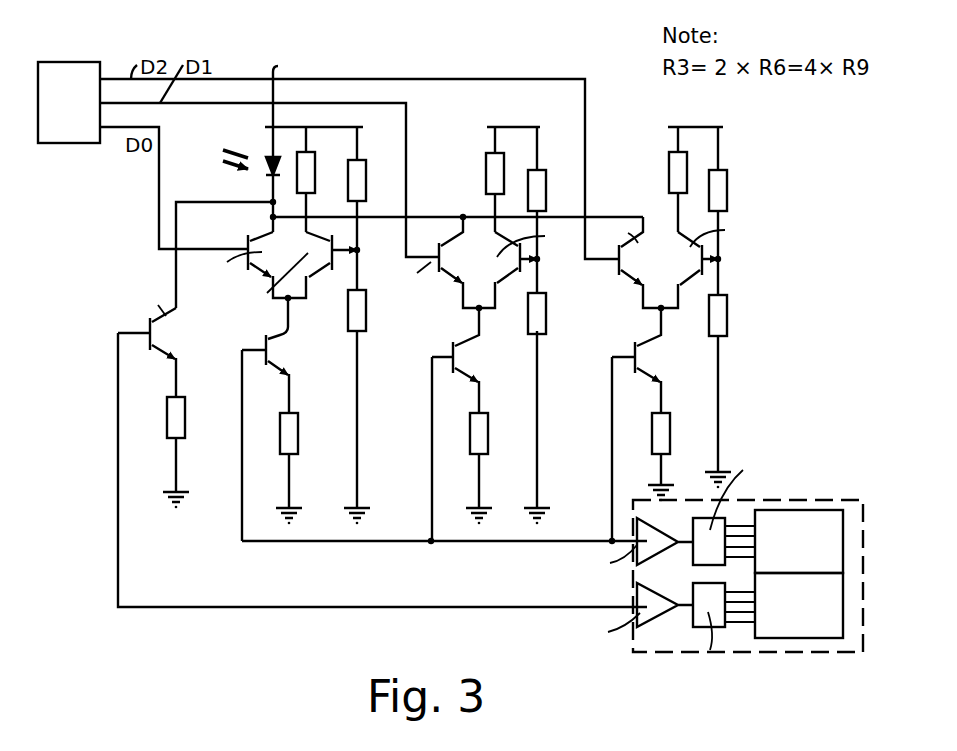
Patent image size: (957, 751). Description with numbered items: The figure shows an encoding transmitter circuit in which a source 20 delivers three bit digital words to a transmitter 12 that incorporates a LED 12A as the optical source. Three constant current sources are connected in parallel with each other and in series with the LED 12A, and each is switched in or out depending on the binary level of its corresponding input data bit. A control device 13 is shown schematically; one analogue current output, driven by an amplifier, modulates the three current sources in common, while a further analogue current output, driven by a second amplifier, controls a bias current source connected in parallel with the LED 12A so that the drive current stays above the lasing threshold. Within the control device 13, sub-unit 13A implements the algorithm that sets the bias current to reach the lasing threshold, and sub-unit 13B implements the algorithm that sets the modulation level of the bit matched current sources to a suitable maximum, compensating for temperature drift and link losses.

The source 20 is at (54, 148).
The transmitter 12 is at (770, 163).
The LED 12A is at (258, 146).
The control device 13 is at (789, 497).
The sub-unit 13A is at (838, 640).
The sub-unit 13B is at (837, 530).